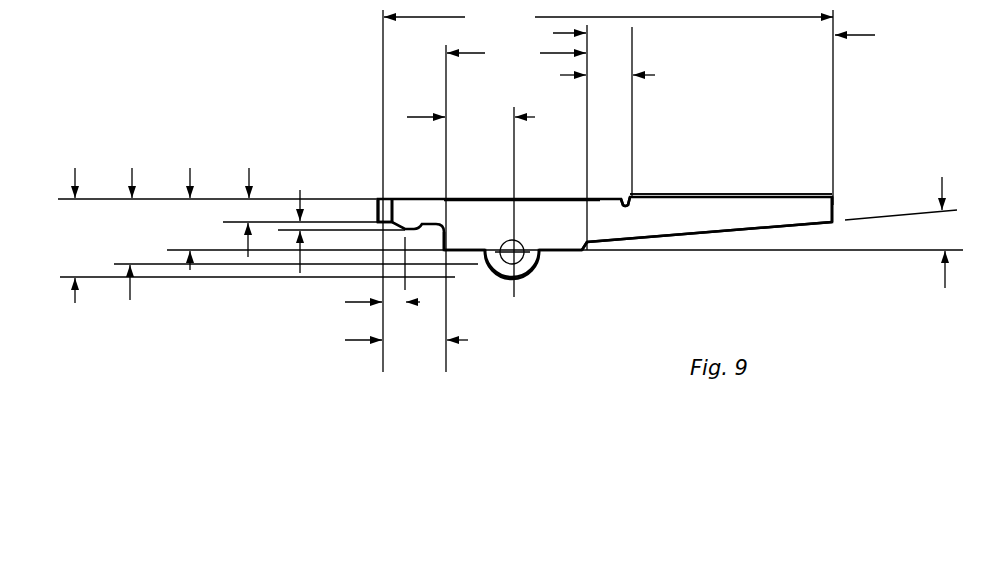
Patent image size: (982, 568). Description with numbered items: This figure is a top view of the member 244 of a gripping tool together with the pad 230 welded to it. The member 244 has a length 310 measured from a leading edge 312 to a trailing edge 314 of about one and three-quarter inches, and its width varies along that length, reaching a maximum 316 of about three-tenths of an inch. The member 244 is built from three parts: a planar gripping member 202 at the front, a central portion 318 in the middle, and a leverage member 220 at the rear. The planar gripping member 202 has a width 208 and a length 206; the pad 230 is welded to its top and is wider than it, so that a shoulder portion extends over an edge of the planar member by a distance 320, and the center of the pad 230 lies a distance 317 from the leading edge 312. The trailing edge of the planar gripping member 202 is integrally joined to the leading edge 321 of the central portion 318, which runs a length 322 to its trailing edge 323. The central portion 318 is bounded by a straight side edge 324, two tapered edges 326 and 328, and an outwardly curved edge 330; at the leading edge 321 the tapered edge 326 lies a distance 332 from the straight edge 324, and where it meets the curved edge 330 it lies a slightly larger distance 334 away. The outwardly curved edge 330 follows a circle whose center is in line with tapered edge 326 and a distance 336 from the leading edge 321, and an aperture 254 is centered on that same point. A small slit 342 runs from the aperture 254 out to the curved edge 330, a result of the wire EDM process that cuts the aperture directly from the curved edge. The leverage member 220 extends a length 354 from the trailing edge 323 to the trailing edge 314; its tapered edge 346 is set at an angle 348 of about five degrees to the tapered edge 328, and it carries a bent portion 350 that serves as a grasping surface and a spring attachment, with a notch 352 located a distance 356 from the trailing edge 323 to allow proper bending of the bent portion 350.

The planar gripping member 202 is at (430, 210).
The length 206 is at (382, 340).
The width 208 is at (218, 199).
The leverage member 220 is at (805, 207).
The pad 230 is at (382, 198).
The member 244 is at (646, 259).
The aperture 254 is at (527, 262).
The length 310 is at (608, 190).
The leading edge 312 is at (375, 207).
The trailing edge 314 is at (839, 205).
The maximum width 316 is at (255, 306).
The distance 317 is at (362, 276).
The central portion 318 is at (464, 210).
The distance 320 is at (314, 219).
The leading edge 321 is at (447, 243).
The length 322 is at (497, 198).
The trailing edge 323 is at (579, 246).
The straight side edge 324 is at (529, 197).
The tapered edge 326 is at (478, 258).
The tapered edge 328 is at (567, 254).
The outwardly curved edge 330 is at (530, 267).
The distance 332 is at (186, 283).
The distance 334 is at (295, 297).
The distance 336 is at (547, 202).
The slit 342 is at (502, 280).
The tapered edge 346 is at (810, 226).
The angle 348 is at (948, 289).
The bent portion 350 is at (723, 191).
The notch 352 is at (635, 189).
The length 354 is at (876, 38).
The distance 356 is at (666, 112).